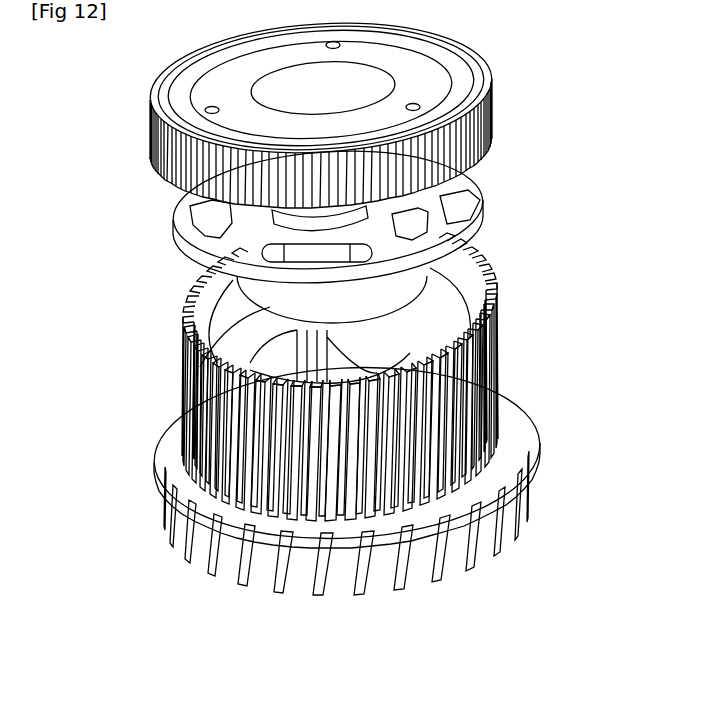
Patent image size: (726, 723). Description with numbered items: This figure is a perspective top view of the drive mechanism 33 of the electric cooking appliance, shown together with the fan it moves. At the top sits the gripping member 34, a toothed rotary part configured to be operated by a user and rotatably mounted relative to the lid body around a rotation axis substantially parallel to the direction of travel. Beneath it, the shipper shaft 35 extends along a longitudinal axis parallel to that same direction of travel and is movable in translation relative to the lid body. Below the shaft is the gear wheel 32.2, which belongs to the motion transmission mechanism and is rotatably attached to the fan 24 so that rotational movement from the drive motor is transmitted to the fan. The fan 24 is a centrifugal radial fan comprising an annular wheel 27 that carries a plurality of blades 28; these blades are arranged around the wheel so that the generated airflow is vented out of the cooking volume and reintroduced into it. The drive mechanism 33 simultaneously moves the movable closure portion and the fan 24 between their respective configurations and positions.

The gripping member 34 is at (473, 135).
The drive mechanism 33 is at (152, 207).
The shipper shaft 35 is at (363, 338).
The gear wheel 32.2 is at (190, 403).
The fan 24 is at (521, 424).
The annular wheel 27 is at (175, 464).
The blades 28 is at (298, 573).